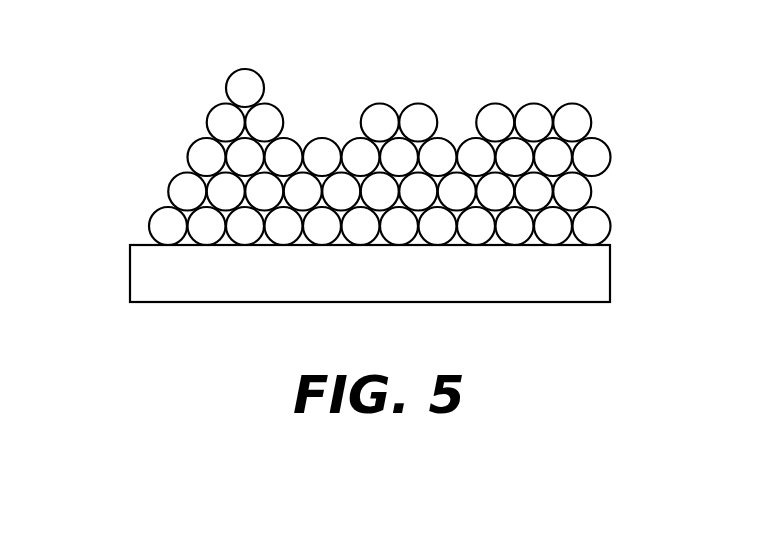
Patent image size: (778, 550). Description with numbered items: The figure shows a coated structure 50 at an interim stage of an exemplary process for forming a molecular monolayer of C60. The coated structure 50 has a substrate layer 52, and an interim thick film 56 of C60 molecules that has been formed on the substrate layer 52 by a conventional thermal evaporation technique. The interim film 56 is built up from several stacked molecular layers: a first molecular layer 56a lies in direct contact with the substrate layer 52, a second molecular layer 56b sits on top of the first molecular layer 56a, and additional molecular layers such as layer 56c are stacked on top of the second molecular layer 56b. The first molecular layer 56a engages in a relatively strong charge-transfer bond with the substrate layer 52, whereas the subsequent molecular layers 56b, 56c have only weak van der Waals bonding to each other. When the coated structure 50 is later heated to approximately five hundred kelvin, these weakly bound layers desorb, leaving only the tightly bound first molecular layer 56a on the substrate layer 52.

The coated structure 50 is at (189, 91).
The substrate layer 52 is at (527, 277).
The interim thick film 56 is at (630, 103).
The first molecular layer 56a is at (120, 223).
The second molecular layer 56b is at (148, 183).
The third particle layer 56c is at (163, 146).